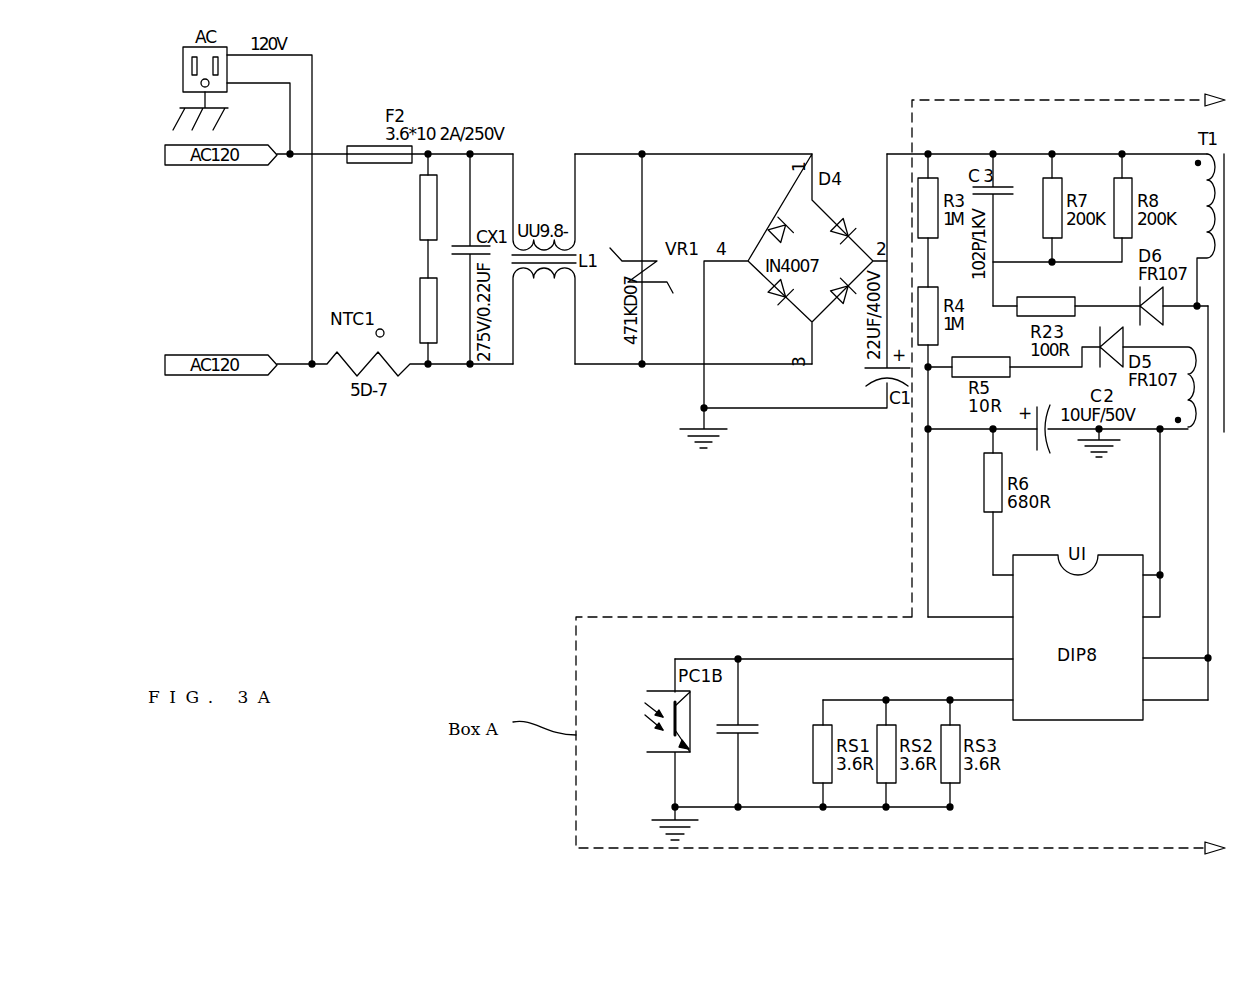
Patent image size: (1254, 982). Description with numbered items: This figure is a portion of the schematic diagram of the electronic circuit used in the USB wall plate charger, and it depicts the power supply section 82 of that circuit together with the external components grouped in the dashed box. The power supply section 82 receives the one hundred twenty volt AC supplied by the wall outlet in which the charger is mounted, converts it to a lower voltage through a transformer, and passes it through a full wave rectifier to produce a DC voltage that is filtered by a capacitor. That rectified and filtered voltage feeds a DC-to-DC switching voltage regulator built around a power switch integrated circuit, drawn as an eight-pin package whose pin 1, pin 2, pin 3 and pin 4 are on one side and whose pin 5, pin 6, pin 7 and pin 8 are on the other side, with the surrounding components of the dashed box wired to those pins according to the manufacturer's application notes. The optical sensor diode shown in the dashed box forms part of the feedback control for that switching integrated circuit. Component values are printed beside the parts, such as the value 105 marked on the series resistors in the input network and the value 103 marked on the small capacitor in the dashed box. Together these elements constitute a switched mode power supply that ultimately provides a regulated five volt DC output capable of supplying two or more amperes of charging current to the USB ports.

The power supply section 82 is at (820, 106).
The pin 1 of controller U1 1 is at (993, 566).
The pin 2 of controller U1 2 is at (970, 608).
The pin 3 of controller U1 3 is at (844, 649).
The pin 4 of controller U1 4 is at (918, 691).
The pin 5 of controller U1 5 is at (1175, 691).
The pin 6 of controller U1 6 is at (1177, 650).
The pin 7 of controller U1 7 is at (1163, 523).
The pin 8 of controller U1 8 is at (1163, 567).
The capacitor C5 103 is at (754, 733).
The resistors R1 and R2 105 is at (412, 259).